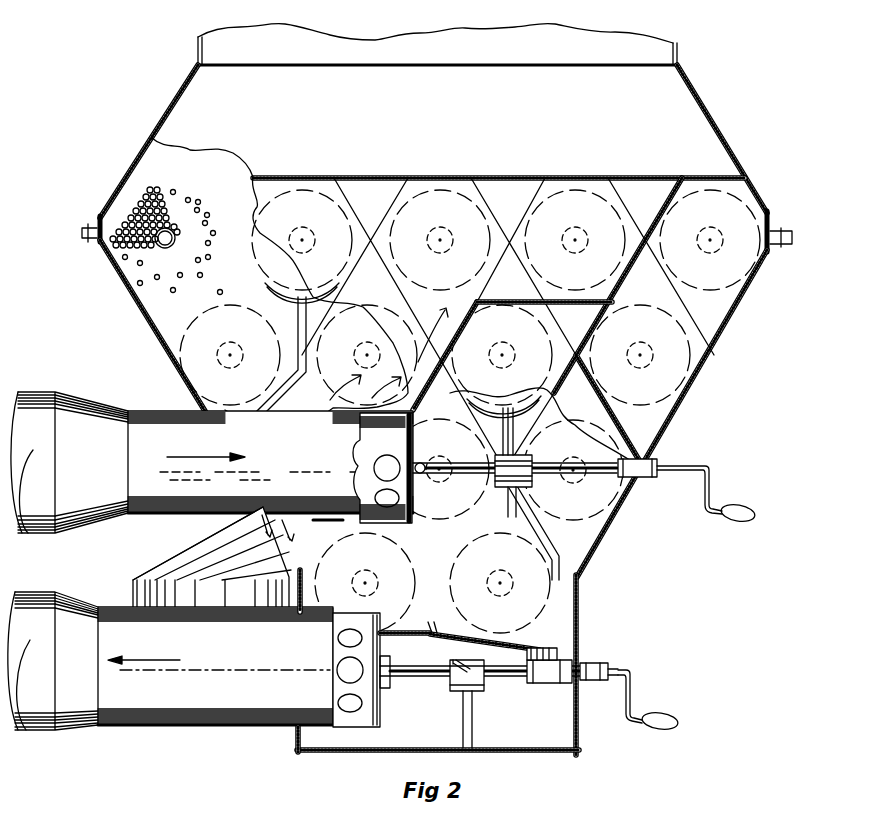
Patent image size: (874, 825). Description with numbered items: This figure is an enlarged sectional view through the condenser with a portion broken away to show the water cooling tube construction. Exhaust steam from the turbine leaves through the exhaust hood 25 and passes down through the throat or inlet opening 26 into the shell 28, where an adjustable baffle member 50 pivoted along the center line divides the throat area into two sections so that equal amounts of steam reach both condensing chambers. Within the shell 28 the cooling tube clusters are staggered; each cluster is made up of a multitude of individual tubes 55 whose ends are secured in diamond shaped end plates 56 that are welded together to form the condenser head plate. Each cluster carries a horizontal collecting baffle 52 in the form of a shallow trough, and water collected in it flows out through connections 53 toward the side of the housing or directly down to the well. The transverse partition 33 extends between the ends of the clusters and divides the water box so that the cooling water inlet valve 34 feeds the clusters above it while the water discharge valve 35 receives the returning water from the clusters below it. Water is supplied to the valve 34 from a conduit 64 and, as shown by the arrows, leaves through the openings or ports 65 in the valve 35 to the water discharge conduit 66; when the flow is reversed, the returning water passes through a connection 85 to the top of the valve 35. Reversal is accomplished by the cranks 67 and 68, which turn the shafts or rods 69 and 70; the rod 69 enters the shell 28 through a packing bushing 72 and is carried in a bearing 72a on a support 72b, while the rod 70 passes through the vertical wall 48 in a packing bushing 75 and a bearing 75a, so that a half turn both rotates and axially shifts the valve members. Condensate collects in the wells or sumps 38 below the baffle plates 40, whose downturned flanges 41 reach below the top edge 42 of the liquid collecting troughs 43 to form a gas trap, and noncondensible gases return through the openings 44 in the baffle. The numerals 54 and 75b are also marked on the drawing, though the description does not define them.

The exhaust hood 25 is at (681, 60).
The adjustable baffle member 50 is at (683, 110).
The throat or inlet opening 26 is at (712, 128).
The shell 28 is at (151, 328).
The end plates 56 is at (343, 178).
The partition 33 is at (488, 302).
The individual tubes 55 is at (124, 215).
The collecting baffle 52 is at (268, 288).
The connections 53 is at (298, 319).
The conduit 64 is at (40, 392).
The cooling water inlet valve 34 is at (160, 518).
The conduit outlet end 54 is at (308, 430).
The connection 85 is at (165, 572).
The water discharge conduit 66 is at (40, 722).
The water discharge valve 35 is at (190, 712).
The openings or ports 65 is at (352, 614).
The vertical wall 48 is at (580, 722).
The wells or sumps 38 is at (506, 739).
The openings 44 is at (430, 630).
The shaft or rod 69 is at (481, 473).
The bearing 72a is at (514, 450).
The support 72b is at (508, 505).
The packing bushing 72 is at (634, 479).
The crank 67 is at (703, 503).
The baffle plates 40 is at (411, 677).
The shaft or rod 70 is at (432, 677).
The bearing 75a is at (470, 664).
The support post 75b is at (463, 736).
The top edge 42 is at (541, 664).
The downturned flanges 41 is at (541, 646).
The liquid collecting troughs 43 is at (581, 660).
The packing bushing 75 is at (600, 666).
The crank 68 is at (632, 694).